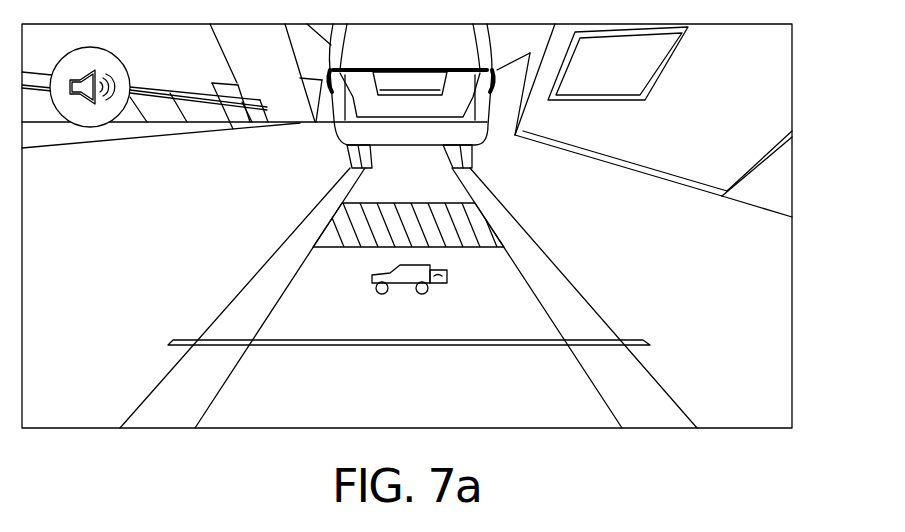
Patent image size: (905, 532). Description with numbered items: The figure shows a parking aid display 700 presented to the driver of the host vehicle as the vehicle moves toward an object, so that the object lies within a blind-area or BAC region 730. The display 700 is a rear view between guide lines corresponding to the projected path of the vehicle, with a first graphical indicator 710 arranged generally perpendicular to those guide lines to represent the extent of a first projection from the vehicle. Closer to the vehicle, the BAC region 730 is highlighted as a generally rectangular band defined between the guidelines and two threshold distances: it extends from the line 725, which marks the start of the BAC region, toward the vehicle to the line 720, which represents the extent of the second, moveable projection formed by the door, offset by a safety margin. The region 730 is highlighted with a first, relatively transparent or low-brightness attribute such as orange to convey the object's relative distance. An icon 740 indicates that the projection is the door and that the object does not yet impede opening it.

The parking aid display 700 is at (782, 97).
The graphical indicator 710 is at (632, 333).
The second indicator 720 is at (516, 244).
The threshold distance indication 725 is at (482, 200).
The BAC region 730 is at (491, 226).
The icon 740 is at (372, 281).